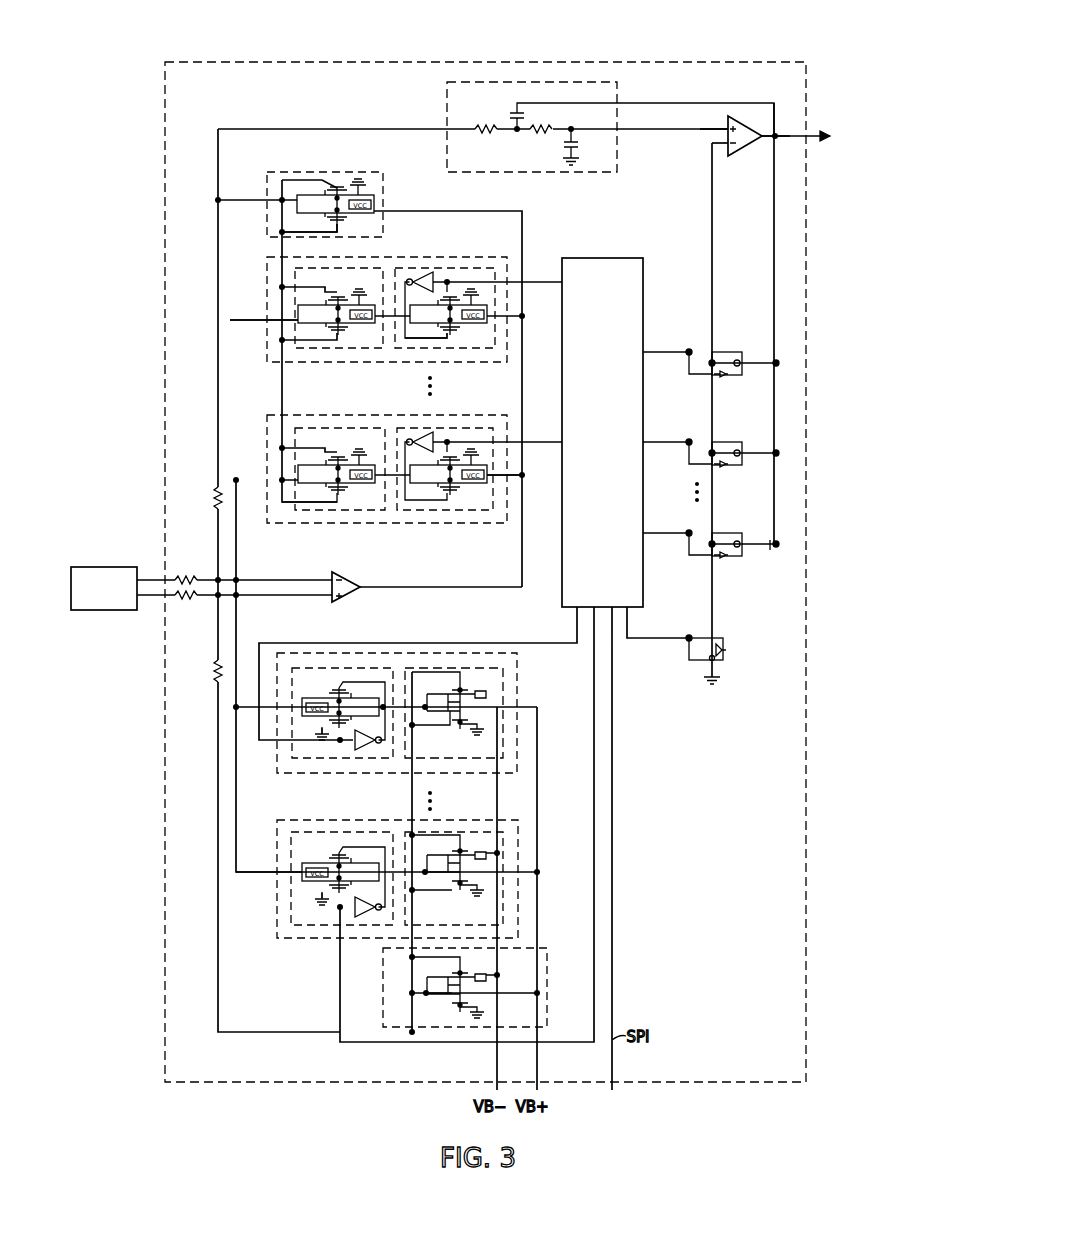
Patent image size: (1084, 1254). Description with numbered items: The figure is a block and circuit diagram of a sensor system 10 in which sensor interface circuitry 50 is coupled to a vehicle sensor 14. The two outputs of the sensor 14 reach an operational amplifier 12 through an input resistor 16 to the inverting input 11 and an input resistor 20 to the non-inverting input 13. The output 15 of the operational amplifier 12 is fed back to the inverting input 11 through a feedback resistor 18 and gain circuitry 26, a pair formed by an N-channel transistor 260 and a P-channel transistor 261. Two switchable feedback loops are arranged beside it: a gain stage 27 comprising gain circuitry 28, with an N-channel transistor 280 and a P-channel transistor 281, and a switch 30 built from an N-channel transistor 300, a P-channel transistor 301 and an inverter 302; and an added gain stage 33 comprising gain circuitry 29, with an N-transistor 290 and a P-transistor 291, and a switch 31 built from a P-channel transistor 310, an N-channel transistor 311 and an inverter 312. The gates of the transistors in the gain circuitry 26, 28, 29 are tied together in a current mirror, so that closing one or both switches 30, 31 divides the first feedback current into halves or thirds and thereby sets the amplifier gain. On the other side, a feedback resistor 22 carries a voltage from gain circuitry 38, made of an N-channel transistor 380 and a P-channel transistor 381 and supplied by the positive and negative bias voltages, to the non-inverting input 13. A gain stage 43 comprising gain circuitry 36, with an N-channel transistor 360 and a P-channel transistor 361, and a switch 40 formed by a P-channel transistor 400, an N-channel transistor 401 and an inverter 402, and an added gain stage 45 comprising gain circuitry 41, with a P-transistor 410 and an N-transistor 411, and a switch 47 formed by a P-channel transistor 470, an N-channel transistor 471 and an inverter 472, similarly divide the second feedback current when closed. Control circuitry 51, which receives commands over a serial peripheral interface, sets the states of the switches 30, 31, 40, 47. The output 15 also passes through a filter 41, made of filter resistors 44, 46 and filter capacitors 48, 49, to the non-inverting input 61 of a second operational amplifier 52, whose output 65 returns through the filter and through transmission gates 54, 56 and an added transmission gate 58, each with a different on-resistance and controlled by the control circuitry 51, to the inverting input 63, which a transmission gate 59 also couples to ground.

The sensor system 10 is at (660, 36).
The inverting input 11 is at (332, 580).
The operational amplifier 12 is at (348, 583).
The non-inverting input 13 is at (334, 600).
The vehicle sensor 14 is at (113, 567).
The output 15 is at (358, 591).
The input resistor 16 is at (184, 577).
The feedback resistor 18 is at (214, 500).
The input resistor 20 is at (186, 599).
The feedback resistor 22 is at (214, 675).
The gain circuitry 26 is at (381, 172).
The gain stage 27 is at (508, 240).
The gain circuitry 28 is at (372, 268).
The gain circuitry 29 is at (350, 428).
The switch 30 is at (450, 268).
The switch 31 is at (445, 428).
The gain stage 33 is at (507, 415).
The gain circuitry 36 is at (455, 832).
The gain circuitry 38 is at (528, 948).
The switch 40 is at (372, 832).
The filter / gain circuitry 41 is at (617, 88).
The gain stage 43 is at (503, 820).
The filter resistor 44 is at (488, 126).
The gain stage 45 is at (500, 653).
The filter resistor 46 is at (541, 134).
The switch 47 is at (385, 668).
The filter capacitor 48 is at (517, 112).
The filter capacitor 49 is at (580, 147).
The sensor interface circuitry 50 is at (757, 62).
The control circuitry 51 is at (628, 258).
The second operational amplifier 52 is at (742, 131).
The transmission gate 54 is at (732, 352).
The transmission gate 56 is at (732, 442).
The transmission gate 58 is at (732, 533).
The transmission gate 59 is at (722, 664).
The non-inverting input 61 is at (727, 127).
The inverting input 63 is at (716, 152).
The output 65 is at (758, 141).
The N-channel transistor 260 is at (322, 182).
The P-channel transistor 261 is at (352, 220).
The N-channel transistor 280 is at (282, 293).
The P-channel transistor 281 is at (235, 322).
The N-transistor 290 is at (330, 440).
The P-transistor 291 is at (325, 500).
The N-channel transistor 300 is at (453, 300).
The P-channel transistor 301 is at (455, 335).
The inverter 302 is at (416, 275).
The P-channel transistor 310 is at (455, 497).
The N-channel transistor 311 is at (487, 452).
The inverter 312 is at (417, 436).
The N-channel transistor 360 is at (470, 890).
The P-channel transistor 361 is at (472, 850).
The N-channel transistor 380 is at (455, 1008).
The P-channel transistor 381 is at (472, 972).
The P-channel transistor 400 is at (333, 853).
The N-channel transistor 401 is at (318, 890).
The inverter 402 is at (366, 920).
The P-transistor 410 is at (475, 693).
The N-transistor 411 is at (452, 720).
The P-channel transistor 470 is at (333, 690).
The N-channel transistor 471 is at (335, 727).
The inverter 472 is at (366, 752).